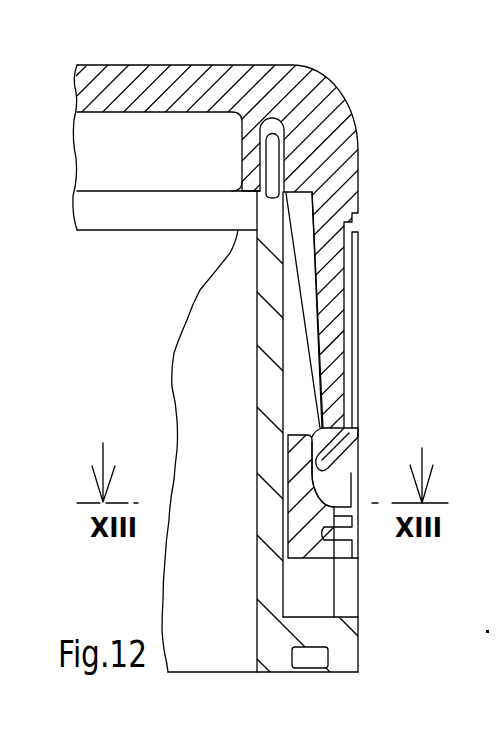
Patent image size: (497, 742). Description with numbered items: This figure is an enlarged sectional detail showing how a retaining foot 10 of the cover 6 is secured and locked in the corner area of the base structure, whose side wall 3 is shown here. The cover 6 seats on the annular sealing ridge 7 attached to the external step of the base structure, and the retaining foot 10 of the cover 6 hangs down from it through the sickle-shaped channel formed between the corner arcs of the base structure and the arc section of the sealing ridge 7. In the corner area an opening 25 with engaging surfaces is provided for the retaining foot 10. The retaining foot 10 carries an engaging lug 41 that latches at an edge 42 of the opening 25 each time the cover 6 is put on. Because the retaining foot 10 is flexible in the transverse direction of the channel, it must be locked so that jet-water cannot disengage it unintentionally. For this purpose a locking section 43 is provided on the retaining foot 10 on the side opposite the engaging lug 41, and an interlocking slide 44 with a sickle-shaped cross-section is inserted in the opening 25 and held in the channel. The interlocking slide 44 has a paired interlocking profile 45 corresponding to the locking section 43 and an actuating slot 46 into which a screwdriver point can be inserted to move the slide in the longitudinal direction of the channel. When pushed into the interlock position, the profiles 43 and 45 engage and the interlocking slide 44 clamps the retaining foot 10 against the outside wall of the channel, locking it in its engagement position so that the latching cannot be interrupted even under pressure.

The side wall 3 is at (263, 628).
The cover 6 is at (122, 92).
The sealing ridge 7 is at (297, 350).
The retaining foot 10 is at (322, 347).
The opening 25 is at (340, 605).
The engaging lug 41 is at (357, 449).
The edge 42 is at (371, 452).
The locking section 43 is at (312, 437).
The interlocking slide 44 is at (310, 515).
The paired interlocking profile 45 is at (310, 448).
The actuating slot 46 is at (328, 536).